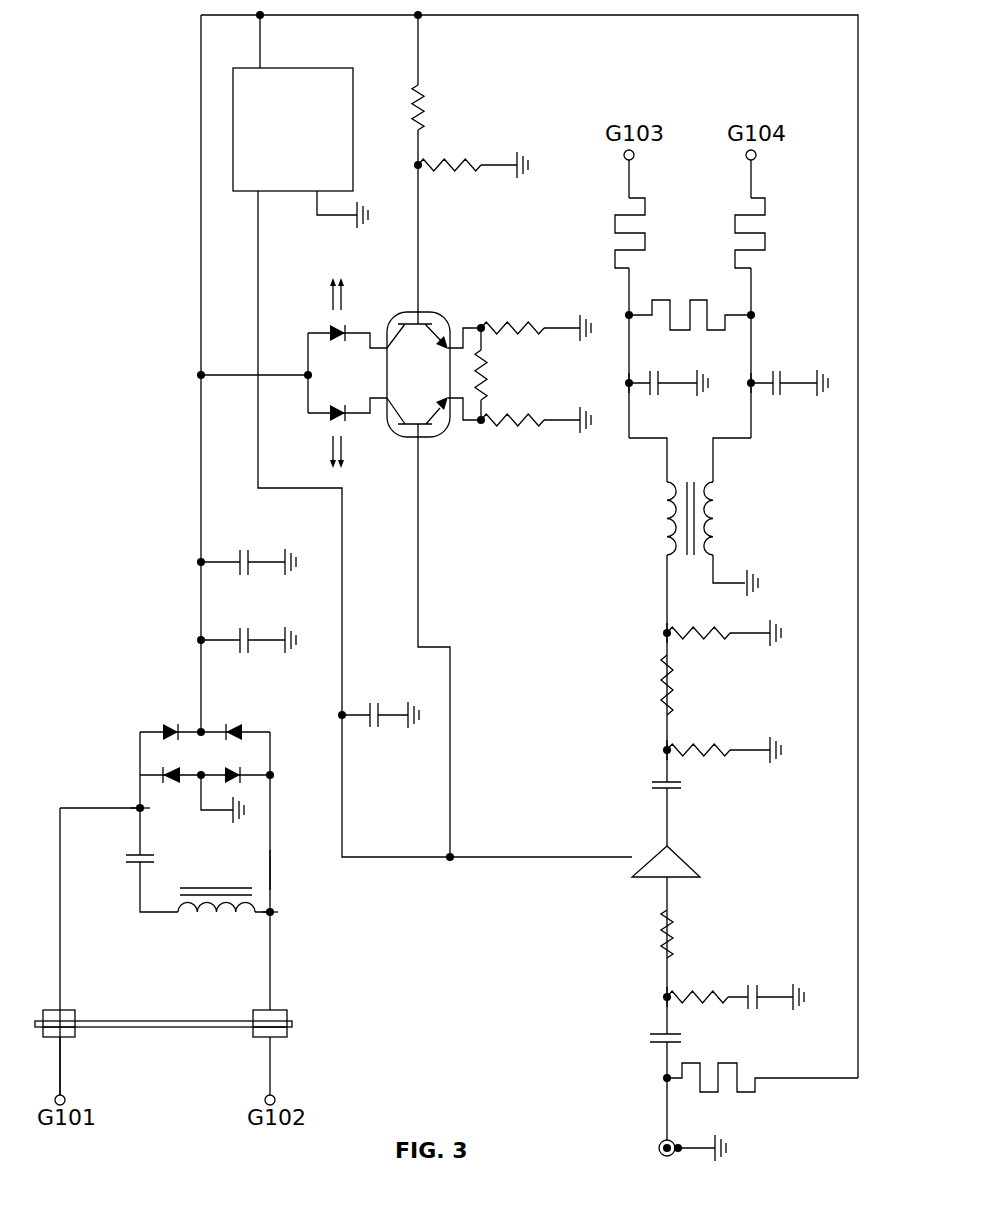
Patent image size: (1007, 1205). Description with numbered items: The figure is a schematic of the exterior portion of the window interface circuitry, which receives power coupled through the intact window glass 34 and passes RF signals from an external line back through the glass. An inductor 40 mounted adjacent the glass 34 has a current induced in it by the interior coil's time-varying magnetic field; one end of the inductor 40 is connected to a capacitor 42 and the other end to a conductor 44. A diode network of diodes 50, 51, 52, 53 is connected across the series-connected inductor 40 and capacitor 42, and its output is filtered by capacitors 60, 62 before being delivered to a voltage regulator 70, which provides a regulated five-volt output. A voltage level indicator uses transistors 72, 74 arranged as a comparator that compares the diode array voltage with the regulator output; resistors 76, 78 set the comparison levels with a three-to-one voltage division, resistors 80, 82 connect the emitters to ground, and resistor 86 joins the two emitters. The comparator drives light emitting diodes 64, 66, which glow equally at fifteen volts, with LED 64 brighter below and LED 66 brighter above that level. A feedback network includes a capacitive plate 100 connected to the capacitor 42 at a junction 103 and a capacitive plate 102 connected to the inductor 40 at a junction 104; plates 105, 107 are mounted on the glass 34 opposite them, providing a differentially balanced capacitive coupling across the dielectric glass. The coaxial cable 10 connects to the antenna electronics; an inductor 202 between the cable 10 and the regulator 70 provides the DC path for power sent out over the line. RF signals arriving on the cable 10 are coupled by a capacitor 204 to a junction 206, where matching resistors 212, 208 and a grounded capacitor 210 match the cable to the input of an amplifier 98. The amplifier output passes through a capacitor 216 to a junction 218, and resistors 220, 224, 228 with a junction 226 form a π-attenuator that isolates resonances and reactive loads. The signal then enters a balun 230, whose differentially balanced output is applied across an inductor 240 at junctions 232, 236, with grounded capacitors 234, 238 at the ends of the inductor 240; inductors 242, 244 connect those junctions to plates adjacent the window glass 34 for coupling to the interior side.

The voltage regulator 70 is at (233, 128).
The resistor 78 is at (425, 117).
The resistor 76 is at (452, 168).
The light emitting diode 66 is at (337, 327).
The light emitting diode 64 is at (335, 408).
The transistor 74 is at (430, 318).
The transistor 72 is at (423, 433).
The resistor 82 is at (530, 322).
The resistor 86 is at (487, 378).
The resistor 80 is at (518, 427).
The capacitor 62 is at (248, 558).
The capacitor 60 is at (248, 633).
The diode 52 is at (173, 727).
The diode 53 is at (237, 727).
The diode 50 is at (172, 782).
The diode 51 is at (232, 782).
The junction 103 is at (140, 807).
The capacitor 42 is at (136, 866).
The inductor 40 is at (225, 888).
The conductor 44 is at (273, 868).
The junction 104 is at (273, 913).
The capacitive plate 100 is at (72, 1008).
The capacitive plate 102 is at (280, 1008).
The plate 105 is at (77, 1030).
The plate 107 is at (288, 1032).
The window glass 34 is at (222, 1027).
The inductor 242 is at (645, 210).
The inductor 244 is at (765, 240).
The inductor 240 is at (697, 300).
The node 232 is at (629, 383).
The node 236 is at (751, 383).
The capacitor 234 is at (658, 393).
The capacitor 238 is at (785, 393).
The balun 230 is at (713, 518).
The junction 226 is at (667, 633).
The resistor 228 is at (712, 643).
The resistor 224 is at (667, 685).
The junction 218 is at (667, 750).
The resistor 220 is at (723, 763).
The capacitor 216 is at (660, 793).
The amplifier 98 is at (683, 865).
The resistor 212 is at (667, 932).
The junction 206 is at (667, 997).
The resistor 208 is at (713, 993).
The capacitor 210 is at (757, 990).
The capacitor 204 is at (655, 1045).
The inductor 202 is at (747, 1093).
The coaxial cable 10 is at (653, 1148).